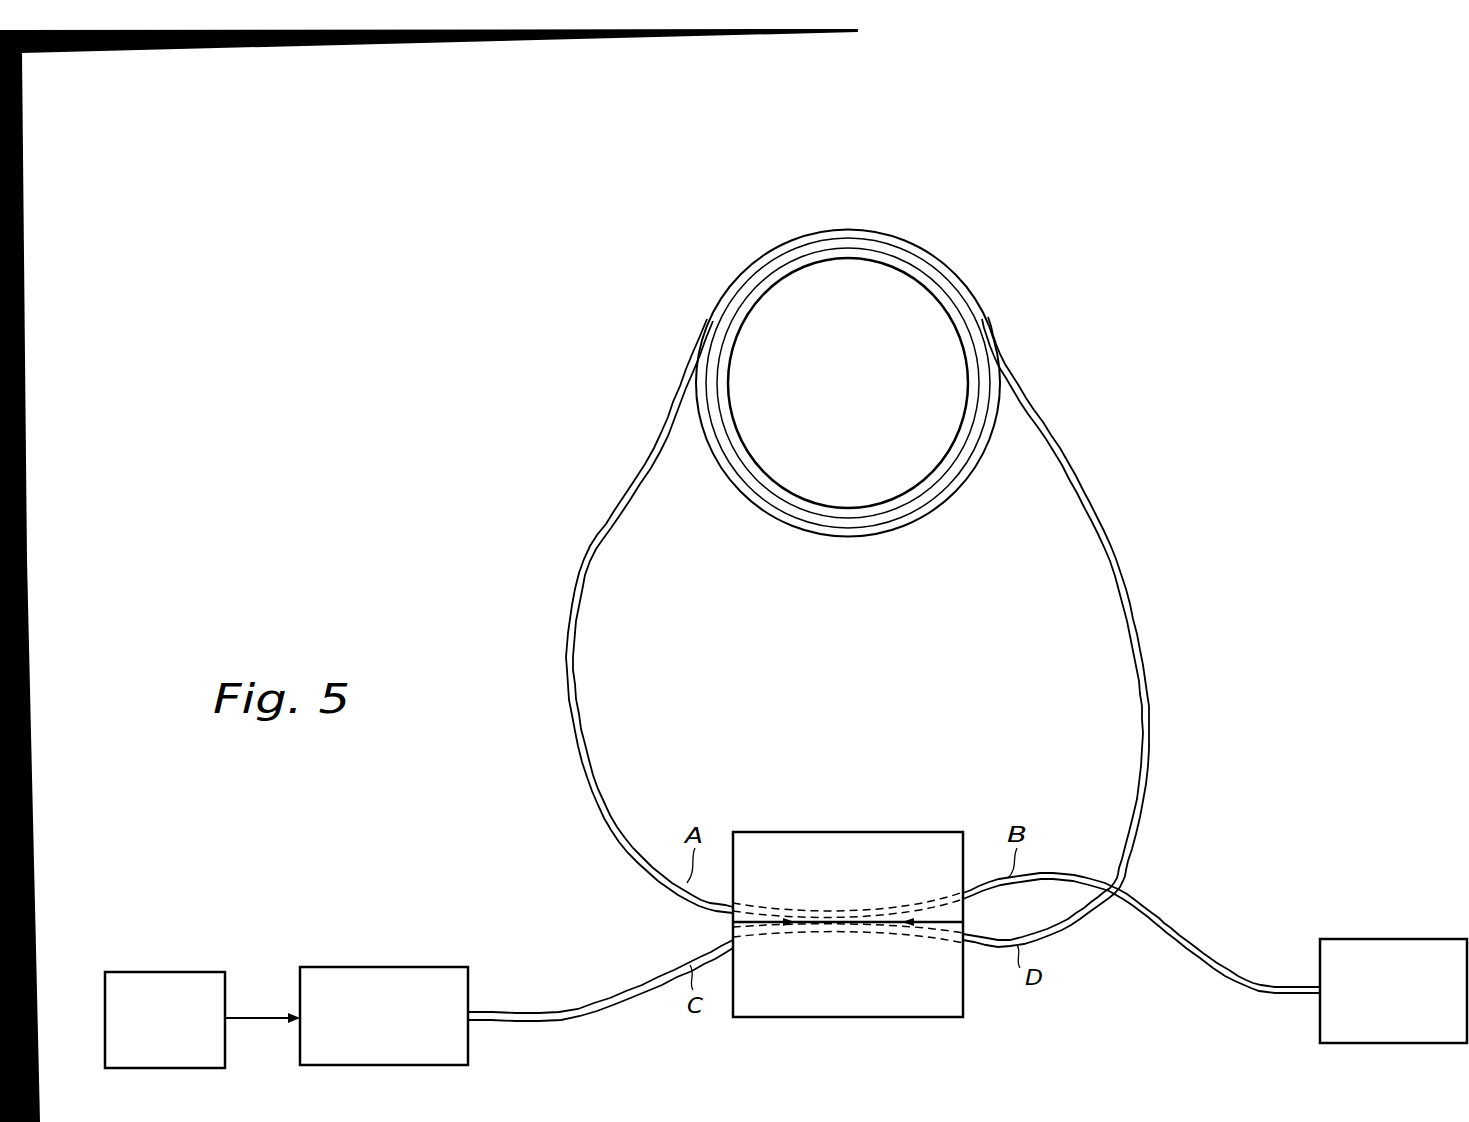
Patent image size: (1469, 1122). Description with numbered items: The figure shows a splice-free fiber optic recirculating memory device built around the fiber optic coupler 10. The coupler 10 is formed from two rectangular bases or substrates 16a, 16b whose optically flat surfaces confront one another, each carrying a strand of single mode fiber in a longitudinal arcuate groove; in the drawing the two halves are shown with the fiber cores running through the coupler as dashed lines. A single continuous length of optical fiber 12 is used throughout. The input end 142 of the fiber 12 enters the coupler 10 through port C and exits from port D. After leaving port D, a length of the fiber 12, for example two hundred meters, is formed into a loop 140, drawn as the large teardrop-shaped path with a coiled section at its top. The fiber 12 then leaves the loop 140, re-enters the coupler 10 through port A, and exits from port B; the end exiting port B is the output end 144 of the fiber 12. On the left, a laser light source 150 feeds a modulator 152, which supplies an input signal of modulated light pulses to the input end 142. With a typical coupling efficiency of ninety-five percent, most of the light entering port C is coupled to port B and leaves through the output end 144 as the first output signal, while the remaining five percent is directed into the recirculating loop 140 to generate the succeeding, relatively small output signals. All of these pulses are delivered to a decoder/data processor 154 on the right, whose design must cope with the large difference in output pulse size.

The fiber optic coupler 10 is at (848, 918).
The optical fiber 12 is at (1115, 561).
The rectangular base or substrate 16a is at (803, 832).
The rectangular base or substrate 16b is at (843, 1018).
The loop 140 is at (1000, 302).
The input end 142 is at (543, 1009).
The output end 144 is at (1262, 992).
The laser light source 150 is at (180, 970).
The modulator 152 is at (390, 967).
The decoder/data processor 154 is at (1390, 938).